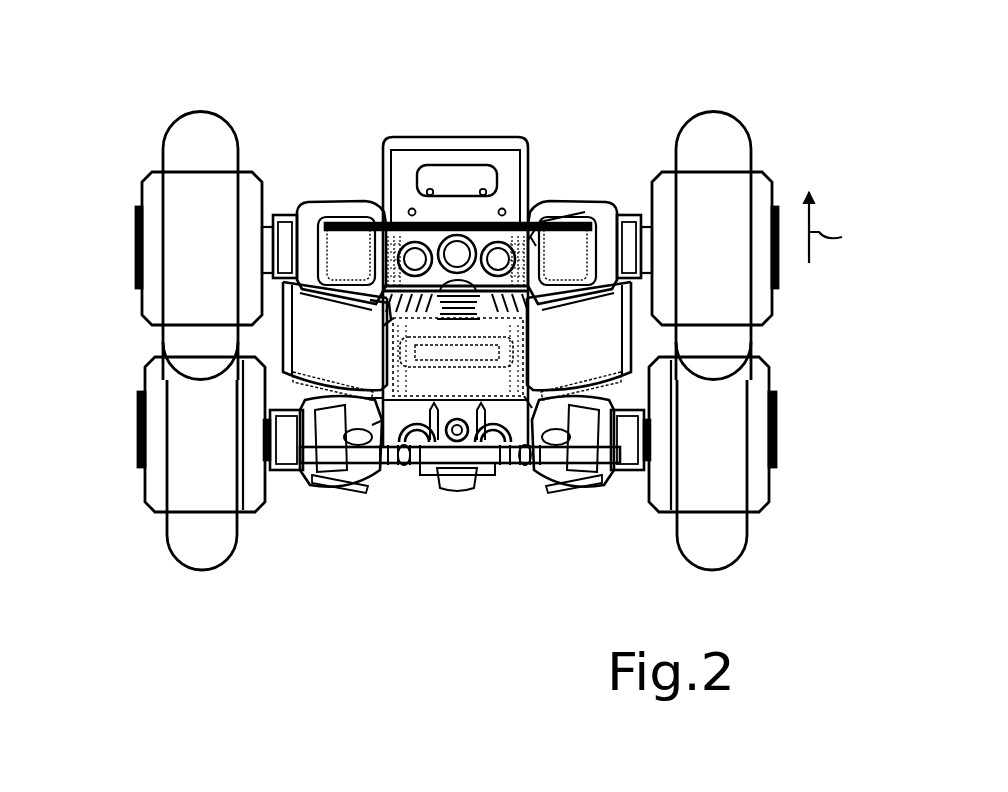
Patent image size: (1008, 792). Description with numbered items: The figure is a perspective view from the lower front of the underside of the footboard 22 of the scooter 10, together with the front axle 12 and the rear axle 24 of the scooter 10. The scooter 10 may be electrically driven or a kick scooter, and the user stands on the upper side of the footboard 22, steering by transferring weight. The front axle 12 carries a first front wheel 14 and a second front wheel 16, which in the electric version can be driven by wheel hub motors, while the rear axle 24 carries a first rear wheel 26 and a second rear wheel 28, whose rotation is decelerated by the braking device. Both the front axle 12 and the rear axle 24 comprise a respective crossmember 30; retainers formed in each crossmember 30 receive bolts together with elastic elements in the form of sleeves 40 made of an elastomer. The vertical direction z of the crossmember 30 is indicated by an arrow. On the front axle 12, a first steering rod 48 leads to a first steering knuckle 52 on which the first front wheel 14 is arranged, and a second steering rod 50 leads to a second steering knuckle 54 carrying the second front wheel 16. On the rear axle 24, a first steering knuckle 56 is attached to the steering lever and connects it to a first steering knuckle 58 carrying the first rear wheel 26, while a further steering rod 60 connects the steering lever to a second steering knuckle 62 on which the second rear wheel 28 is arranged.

The scooter 10 is at (255, 79).
The front axle 12 is at (357, 186).
The first front wheel 14 is at (735, 143).
The second front wheel 16 is at (178, 140).
The footboard 22 is at (310, 310).
The rear axle 24 is at (532, 502).
The first rear wheel 26 is at (735, 447).
The second rear wheel 28 is at (190, 463).
The crossmember 30 is at (541, 236).
The sleeve 40 is at (420, 232).
The first steering rod 48 is at (537, 243).
The second steering rod 50 is at (378, 317).
The first steering knuckle 52 is at (594, 215).
The second steering knuckle 54 is at (313, 218).
The first steering knuckle 56 is at (518, 454).
The first steering knuckle 58 is at (603, 481).
The further steering rod 60 is at (380, 458).
The second steering knuckle 62 is at (315, 432).